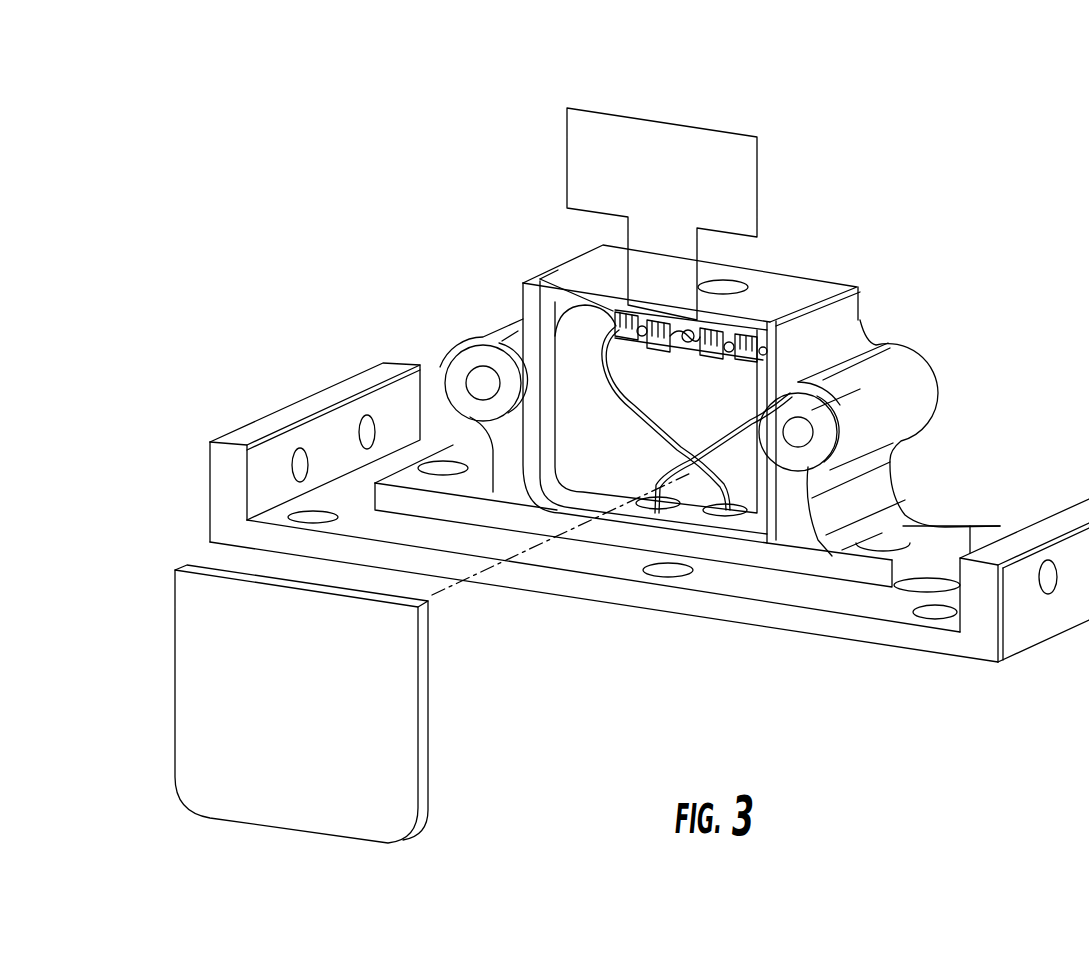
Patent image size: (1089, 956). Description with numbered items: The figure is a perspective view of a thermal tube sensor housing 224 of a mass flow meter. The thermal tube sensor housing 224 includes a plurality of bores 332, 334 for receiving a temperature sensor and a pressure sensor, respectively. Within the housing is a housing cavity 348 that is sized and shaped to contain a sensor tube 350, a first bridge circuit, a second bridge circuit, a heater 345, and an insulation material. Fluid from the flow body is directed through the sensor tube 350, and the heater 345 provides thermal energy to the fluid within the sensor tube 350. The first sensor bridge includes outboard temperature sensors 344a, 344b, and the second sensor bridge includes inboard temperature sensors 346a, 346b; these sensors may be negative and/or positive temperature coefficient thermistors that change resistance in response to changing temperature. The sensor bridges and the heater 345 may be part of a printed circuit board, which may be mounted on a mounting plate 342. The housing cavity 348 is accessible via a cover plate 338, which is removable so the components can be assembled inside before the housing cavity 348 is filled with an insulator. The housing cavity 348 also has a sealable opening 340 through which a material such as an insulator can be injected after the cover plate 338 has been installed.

The thermal tube sensor housing 224 is at (436, 158).
The bore 332 is at (439, 398).
The bore 334 is at (993, 491).
The cover plate 338 is at (313, 732).
The sealable opening 340 is at (740, 287).
The mounting plate 342 is at (712, 127).
The outboard temperature sensor 344a is at (760, 326).
The outboard temperature sensor 344b is at (613, 312).
The heater 345 is at (690, 340).
The inboard temperature sensor 346a is at (708, 345).
The inboard temperature sensor 346b is at (650, 350).
The housing cavity 348 is at (575, 345).
The sensor tube 350 is at (737, 423).